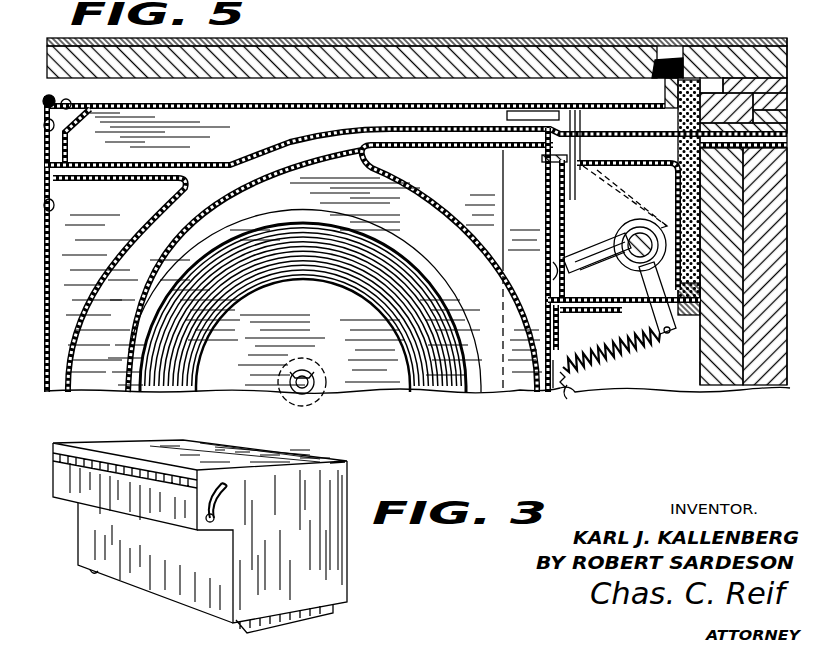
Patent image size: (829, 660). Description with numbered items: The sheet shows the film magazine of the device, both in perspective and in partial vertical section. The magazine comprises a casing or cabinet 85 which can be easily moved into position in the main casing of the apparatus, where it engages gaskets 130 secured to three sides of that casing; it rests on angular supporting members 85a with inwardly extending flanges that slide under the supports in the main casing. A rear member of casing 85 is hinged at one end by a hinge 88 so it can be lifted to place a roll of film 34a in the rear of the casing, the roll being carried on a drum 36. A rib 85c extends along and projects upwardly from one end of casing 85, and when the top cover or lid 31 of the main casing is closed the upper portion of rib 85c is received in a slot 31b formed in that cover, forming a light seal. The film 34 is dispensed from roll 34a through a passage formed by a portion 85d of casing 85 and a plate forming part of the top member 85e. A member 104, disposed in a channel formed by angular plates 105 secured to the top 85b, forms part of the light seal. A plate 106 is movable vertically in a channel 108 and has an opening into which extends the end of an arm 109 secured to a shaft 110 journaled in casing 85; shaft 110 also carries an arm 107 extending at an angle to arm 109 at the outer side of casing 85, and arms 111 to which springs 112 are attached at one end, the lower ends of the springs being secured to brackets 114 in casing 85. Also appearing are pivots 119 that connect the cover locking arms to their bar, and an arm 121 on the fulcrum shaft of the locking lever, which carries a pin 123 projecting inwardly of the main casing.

In FIG. 5, the top cover or lid 31 is at (641, 60).
In FIG. 5, the slot 31b is at (684, 60).
In FIG. 5, the film 34 is at (290, 166).
In FIG. 5, the roll of film 34a is at (421, 270).
In FIG. 5, the drum 36 is at (336, 287).
In FIG. 3, the casing or cabinet 85 is at (292, 585).
In FIG. 3, the supporting members 85a is at (348, 605).
In FIG. 3, the top 85b is at (262, 456).
In FIG. 5, the rib 85c is at (657, 85).
In FIG. 3, the rib 85c is at (104, 452).
In FIG. 5, the portion of casing 85d is at (445, 151).
In FIG. 5, the top member 85e is at (424, 126).
In FIG. 5, the hinge 88 is at (44, 101).
In FIG. 3, the hinge 88 is at (346, 463).
In FIG. 5, the member 104 is at (582, 108).
In FIG. 5, the angular plates 105 is at (507, 121).
In FIG. 5, the plate 106 is at (560, 214).
In FIG. 5, the arm 107 is at (547, 182).
In FIG. 3, the arm 107 is at (226, 504).
In FIG. 5, the channel 108 is at (548, 297).
In FIG. 5, the arm 109 is at (590, 303).
In FIG. 5, the shaft 110 is at (644, 233).
In FIG. 3, the shaft 110 is at (215, 517).
In FIG. 5, the arms 111 is at (676, 312).
In FIG. 5, the springs 112 is at (619, 355).
In FIG. 5, the brackets 114 is at (550, 390).
In FIG. 5, the pivots 119 is at (692, 222).
In FIG. 5, the arm 121 is at (641, 192).
In FIG. 5, the pin 123 is at (601, 160).
In FIG. 5, the gaskets 130 is at (746, 300).